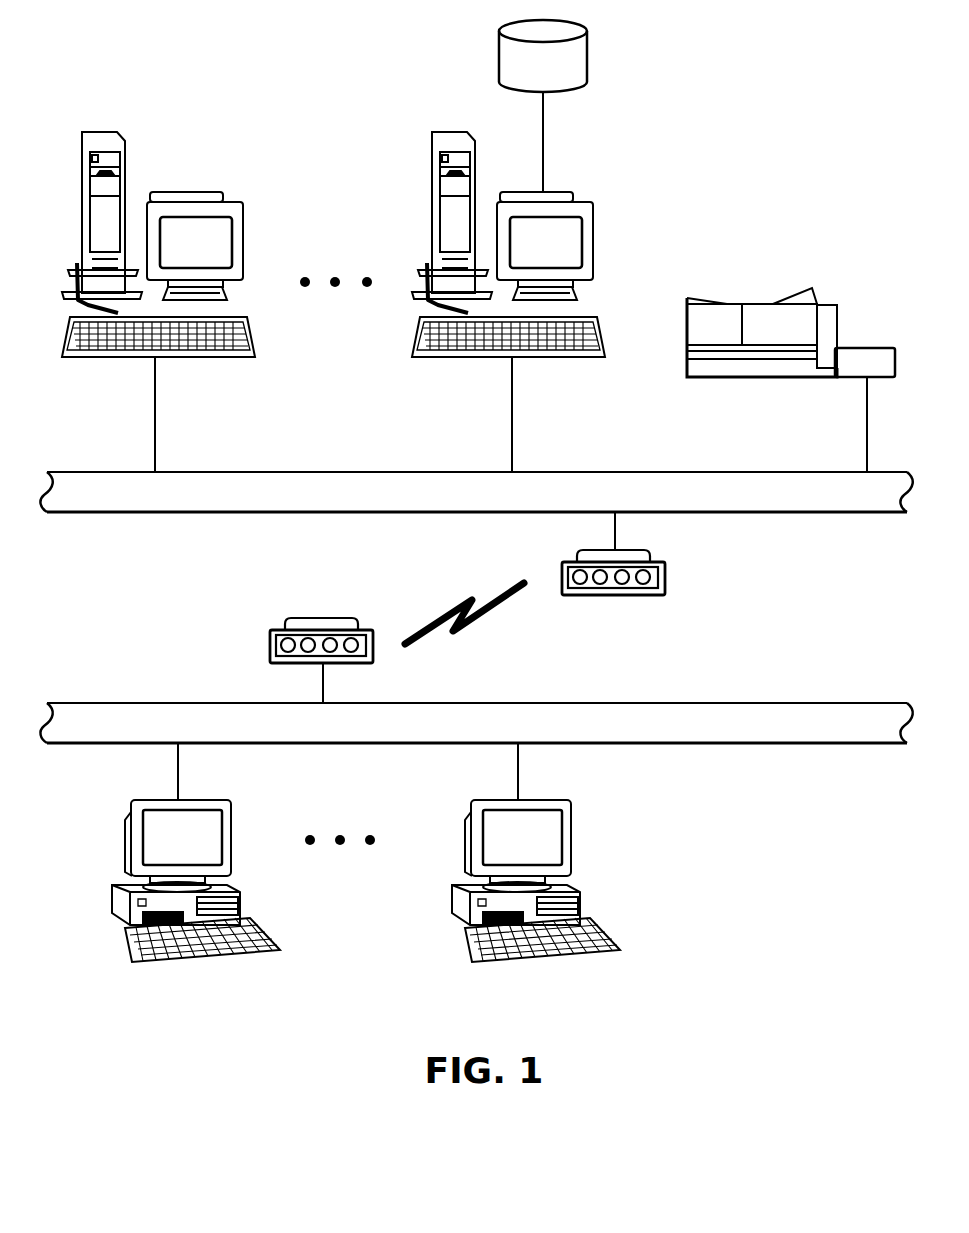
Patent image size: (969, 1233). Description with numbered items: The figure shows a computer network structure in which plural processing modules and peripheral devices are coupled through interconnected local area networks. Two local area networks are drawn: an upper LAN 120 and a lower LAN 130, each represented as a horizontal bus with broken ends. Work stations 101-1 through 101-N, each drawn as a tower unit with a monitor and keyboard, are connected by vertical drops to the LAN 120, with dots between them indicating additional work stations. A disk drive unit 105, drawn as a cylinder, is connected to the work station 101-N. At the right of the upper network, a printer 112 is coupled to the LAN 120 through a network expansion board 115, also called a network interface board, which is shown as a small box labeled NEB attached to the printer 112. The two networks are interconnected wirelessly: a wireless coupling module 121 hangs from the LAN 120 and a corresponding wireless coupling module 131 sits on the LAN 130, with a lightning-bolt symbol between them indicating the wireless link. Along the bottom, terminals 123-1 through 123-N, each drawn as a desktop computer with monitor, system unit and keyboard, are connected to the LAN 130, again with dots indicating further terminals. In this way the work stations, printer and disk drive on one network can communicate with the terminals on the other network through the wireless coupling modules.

The work station 101-1 is at (175, 190).
The work station 101-N is at (567, 187).
The disk drive unit 105 is at (587, 47).
The printer 112 is at (723, 305).
The network expansion board 115 is at (853, 348).
The LAN 120 is at (295, 472).
The wireless coupling module 121 is at (667, 585).
The LAN 130 is at (667, 703).
The wireless coupling module 131 is at (270, 650).
The terminal 123-1 is at (230, 812).
The terminal 123-N is at (570, 812).